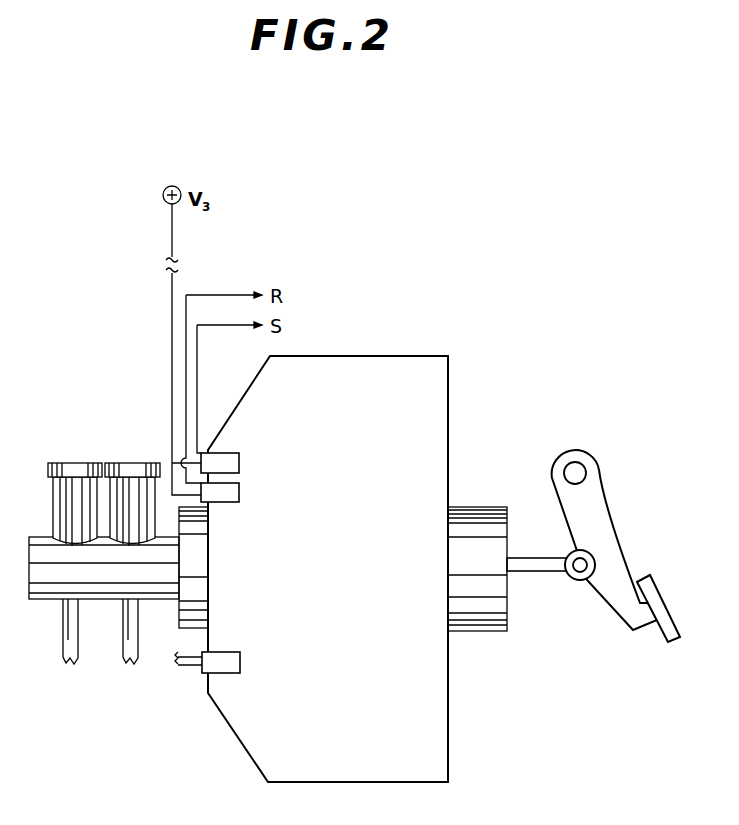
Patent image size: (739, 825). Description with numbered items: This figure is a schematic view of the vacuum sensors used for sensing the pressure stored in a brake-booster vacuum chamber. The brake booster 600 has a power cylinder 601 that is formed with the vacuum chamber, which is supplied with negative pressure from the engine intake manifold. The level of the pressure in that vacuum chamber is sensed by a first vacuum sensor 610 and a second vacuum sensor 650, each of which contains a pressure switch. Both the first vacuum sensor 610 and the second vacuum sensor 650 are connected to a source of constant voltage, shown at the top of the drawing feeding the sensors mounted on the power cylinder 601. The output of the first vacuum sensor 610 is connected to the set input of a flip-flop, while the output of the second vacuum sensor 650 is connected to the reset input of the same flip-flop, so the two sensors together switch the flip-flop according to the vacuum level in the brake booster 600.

The brake booster 600 is at (412, 352).
The power cylinder 601 is at (348, 355).
The first vacuum sensor 610 is at (228, 450).
The second vacuum sensor 650 is at (240, 491).